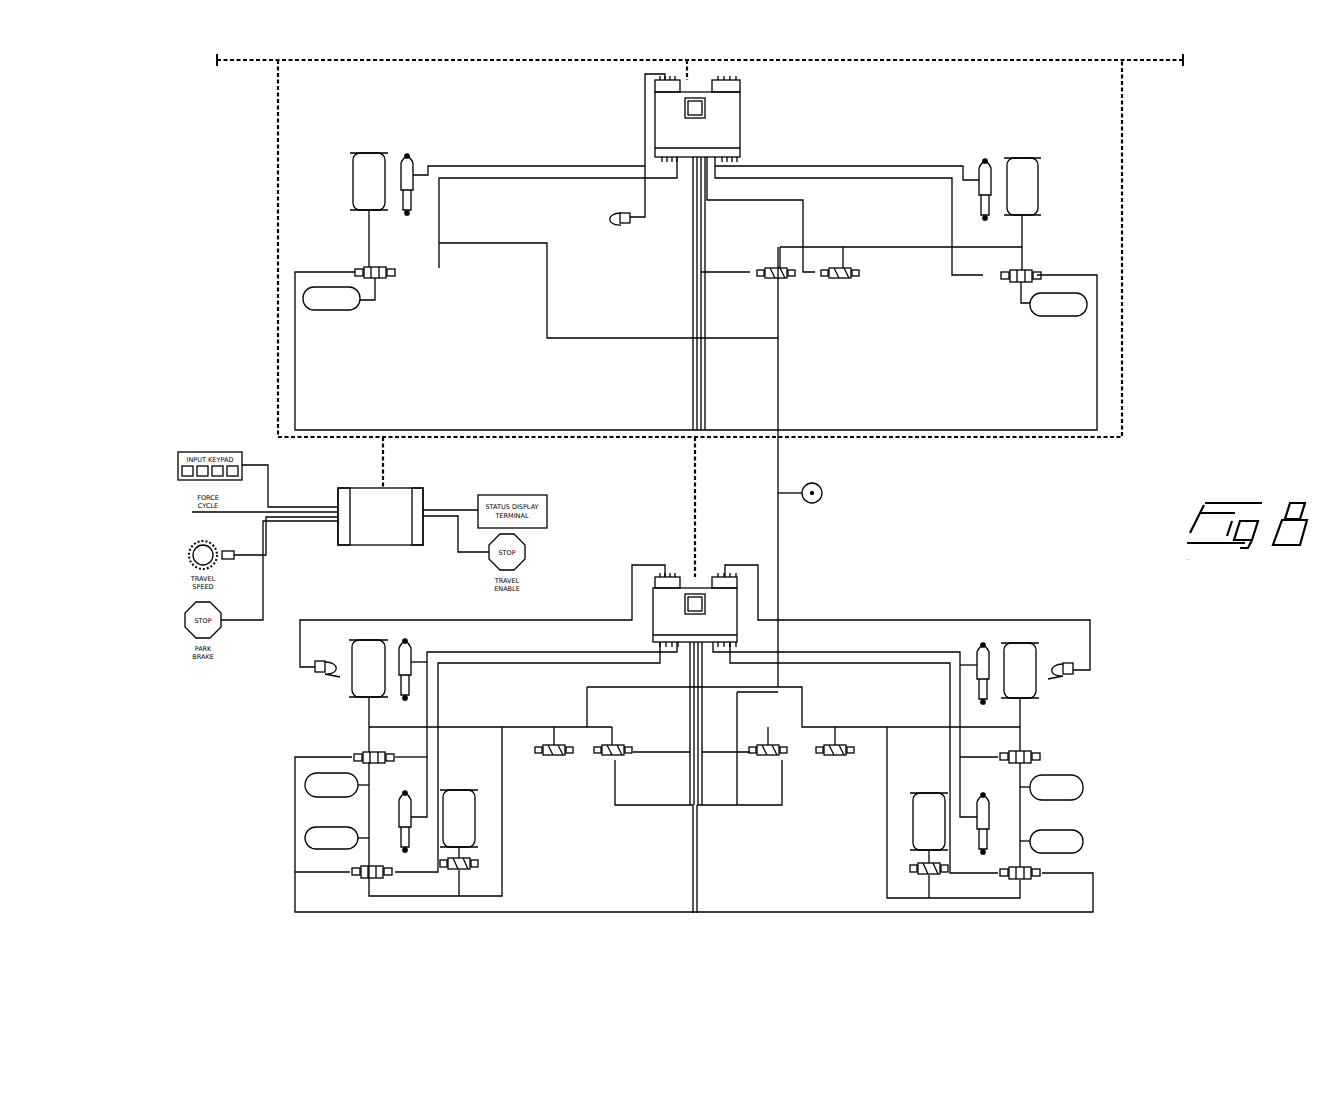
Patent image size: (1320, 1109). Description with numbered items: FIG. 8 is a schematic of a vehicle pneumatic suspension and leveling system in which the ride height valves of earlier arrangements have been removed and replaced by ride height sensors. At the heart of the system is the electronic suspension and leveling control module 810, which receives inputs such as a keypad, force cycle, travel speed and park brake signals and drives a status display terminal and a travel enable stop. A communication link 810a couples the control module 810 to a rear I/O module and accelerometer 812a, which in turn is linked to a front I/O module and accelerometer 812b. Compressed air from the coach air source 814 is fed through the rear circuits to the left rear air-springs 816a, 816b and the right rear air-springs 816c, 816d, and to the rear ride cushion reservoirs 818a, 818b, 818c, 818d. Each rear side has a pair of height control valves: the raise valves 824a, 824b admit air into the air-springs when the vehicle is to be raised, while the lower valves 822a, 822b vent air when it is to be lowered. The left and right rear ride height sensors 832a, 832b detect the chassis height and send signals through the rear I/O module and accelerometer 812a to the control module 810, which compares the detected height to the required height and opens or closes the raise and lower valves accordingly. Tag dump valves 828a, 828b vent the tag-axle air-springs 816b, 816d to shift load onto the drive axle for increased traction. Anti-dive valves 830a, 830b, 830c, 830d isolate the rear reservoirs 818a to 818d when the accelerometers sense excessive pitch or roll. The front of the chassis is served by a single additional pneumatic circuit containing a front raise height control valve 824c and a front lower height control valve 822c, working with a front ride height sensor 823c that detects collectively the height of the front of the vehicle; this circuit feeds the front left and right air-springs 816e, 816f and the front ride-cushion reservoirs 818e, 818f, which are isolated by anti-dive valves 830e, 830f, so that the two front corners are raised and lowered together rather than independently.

The control module 810 is at (403, 537).
The communication link to control module 810a is at (390, 463).
The rear I/O module and accelerometer 812a is at (730, 606).
The front I/O module and accelerometer 812b is at (733, 116).
The coach air source 814 is at (820, 500).
The left rear air-spring 816a is at (372, 686).
The left rear air-spring 816b is at (468, 830).
The right rear air-spring 816c is at (1021, 643).
The right rear air-spring 816d is at (915, 832).
The front left air-spring 816e is at (369, 152).
The front right air-spring 816f is at (1023, 160).
The left rear ride cushion reservoir 818a is at (316, 785).
The left rear ride cushion reservoir 818b is at (320, 838).
The right rear ride cushion reservoir 818c is at (1075, 786).
The right rear ride cushion reservoir 818d is at (1072, 841).
The front left ride-cushion reservoir 818e is at (345, 298).
The front right ride-cushion reservoir 818f is at (1068, 301).
The left rear lower height control valve 822a is at (548, 758).
The right rear lower height control valve 822b is at (837, 760).
The front lower height control valve 822c is at (836, 279).
The front ride height sensor 823c is at (630, 221).
The left rear raise height control valve 824a is at (613, 760).
The right rear raise height control valve 824b is at (766, 760).
The front raise height control valve 824c is at (768, 279).
The left tag dump valve 828a is at (478, 868).
The right tag dump valve 828b is at (908, 870).
The anti-dive valve 830a is at (356, 756).
The anti-dive valve 830b is at (352, 868).
The anti-dive valve 830c is at (1032, 758).
The anti-dive valve 830d is at (1032, 877).
The anti-dive valve 830e is at (384, 278).
The anti-dive valve 830f is at (1030, 270).
The left rear ride height sensor 832a is at (315, 672).
The right rear ride height sensor 832b is at (1075, 674).